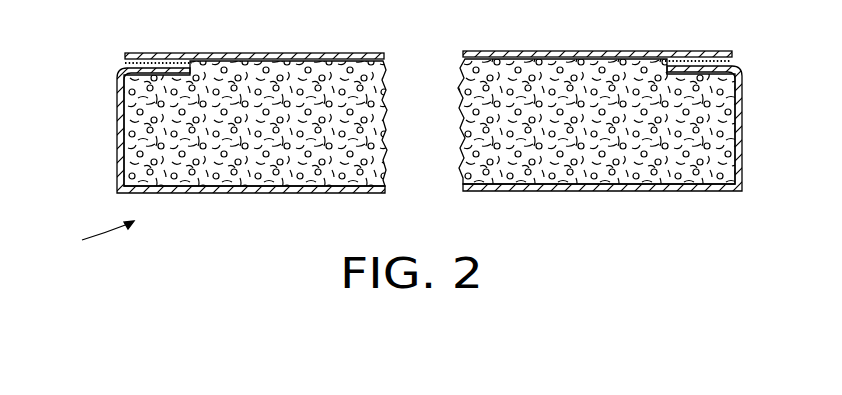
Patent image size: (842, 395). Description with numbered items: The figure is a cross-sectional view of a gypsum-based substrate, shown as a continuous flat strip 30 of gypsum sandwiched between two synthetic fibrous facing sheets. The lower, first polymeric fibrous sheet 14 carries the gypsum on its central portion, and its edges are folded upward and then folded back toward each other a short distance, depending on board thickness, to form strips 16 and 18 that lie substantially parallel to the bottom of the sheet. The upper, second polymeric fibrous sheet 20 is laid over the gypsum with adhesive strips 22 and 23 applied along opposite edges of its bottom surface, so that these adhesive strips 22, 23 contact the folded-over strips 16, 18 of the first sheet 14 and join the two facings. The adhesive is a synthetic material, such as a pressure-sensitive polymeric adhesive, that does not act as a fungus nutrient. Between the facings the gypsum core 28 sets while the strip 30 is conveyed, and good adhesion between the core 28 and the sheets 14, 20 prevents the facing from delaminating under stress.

The first polymeric fibrous sheet 14 is at (362, 190).
The folded over strip 16 is at (137, 90).
The folded over strip 18 is at (705, 77).
The second polymeric fibrous sheet 20 is at (510, 52).
The adhesive strip 22 is at (123, 65).
The adhesive strip 23 is at (735, 62).
The gypsum core 28 is at (528, 148).
The flat strip 30 is at (87, 239).